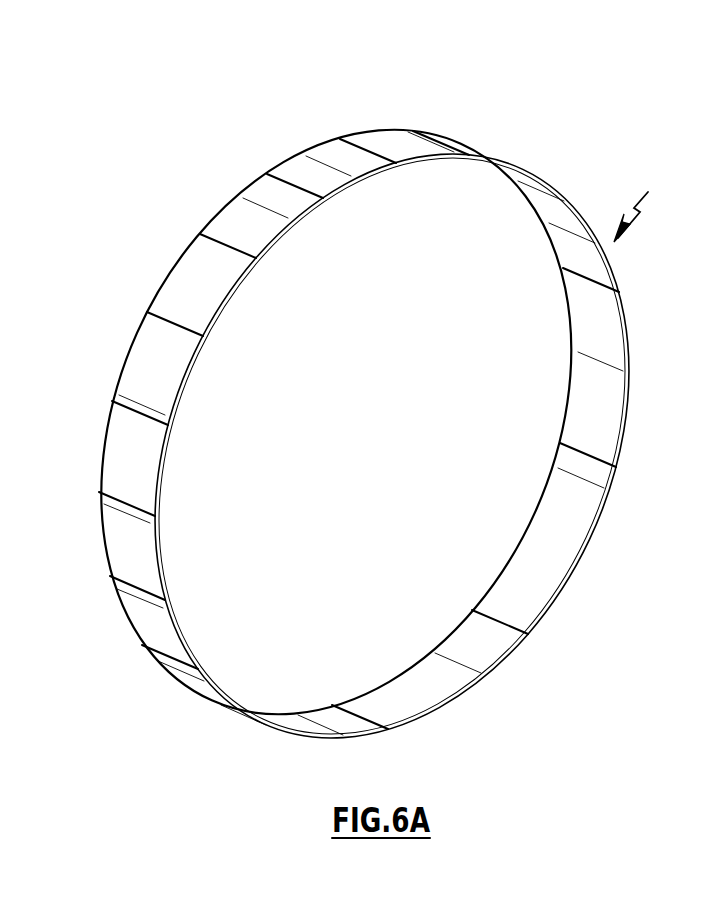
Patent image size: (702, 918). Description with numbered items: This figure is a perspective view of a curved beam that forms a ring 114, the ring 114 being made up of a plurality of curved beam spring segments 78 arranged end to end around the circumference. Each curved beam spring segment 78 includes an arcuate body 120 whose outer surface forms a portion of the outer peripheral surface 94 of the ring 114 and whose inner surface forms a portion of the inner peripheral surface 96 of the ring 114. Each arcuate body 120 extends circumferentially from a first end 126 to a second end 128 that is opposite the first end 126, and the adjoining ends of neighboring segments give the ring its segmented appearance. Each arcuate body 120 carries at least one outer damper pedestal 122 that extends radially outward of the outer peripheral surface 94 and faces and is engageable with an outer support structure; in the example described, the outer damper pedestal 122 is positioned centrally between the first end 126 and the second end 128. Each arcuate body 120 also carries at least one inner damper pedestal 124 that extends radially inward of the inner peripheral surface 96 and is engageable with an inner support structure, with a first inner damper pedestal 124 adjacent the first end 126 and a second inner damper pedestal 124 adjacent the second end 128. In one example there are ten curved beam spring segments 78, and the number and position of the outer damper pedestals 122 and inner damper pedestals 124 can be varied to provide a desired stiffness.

The curved beam spring segment 78 is at (420, 152).
The outer peripheral surface 94 is at (180, 270).
The inner peripheral surface 96 is at (314, 718).
The ring 114 is at (653, 203).
The arcuate body 120 is at (392, 130).
The outer damper pedestal 122 is at (457, 143).
The inner damper pedestal 124 is at (393, 168).
The first end 126 is at (356, 137).
The second end 128 is at (524, 178).